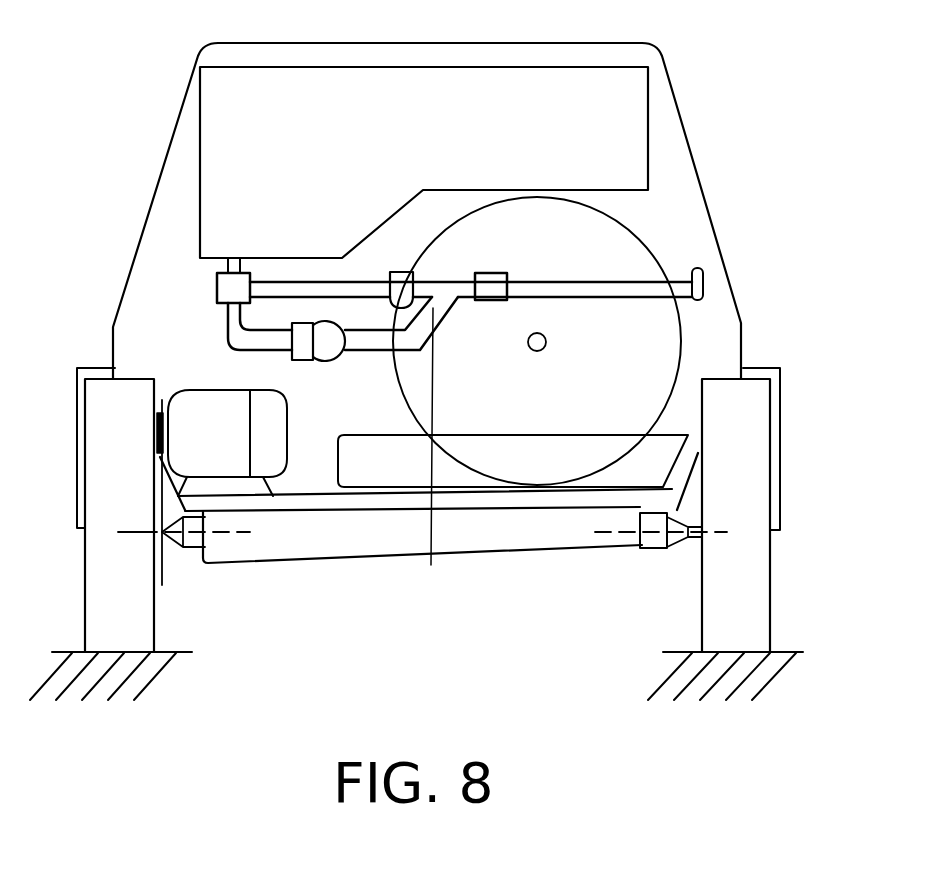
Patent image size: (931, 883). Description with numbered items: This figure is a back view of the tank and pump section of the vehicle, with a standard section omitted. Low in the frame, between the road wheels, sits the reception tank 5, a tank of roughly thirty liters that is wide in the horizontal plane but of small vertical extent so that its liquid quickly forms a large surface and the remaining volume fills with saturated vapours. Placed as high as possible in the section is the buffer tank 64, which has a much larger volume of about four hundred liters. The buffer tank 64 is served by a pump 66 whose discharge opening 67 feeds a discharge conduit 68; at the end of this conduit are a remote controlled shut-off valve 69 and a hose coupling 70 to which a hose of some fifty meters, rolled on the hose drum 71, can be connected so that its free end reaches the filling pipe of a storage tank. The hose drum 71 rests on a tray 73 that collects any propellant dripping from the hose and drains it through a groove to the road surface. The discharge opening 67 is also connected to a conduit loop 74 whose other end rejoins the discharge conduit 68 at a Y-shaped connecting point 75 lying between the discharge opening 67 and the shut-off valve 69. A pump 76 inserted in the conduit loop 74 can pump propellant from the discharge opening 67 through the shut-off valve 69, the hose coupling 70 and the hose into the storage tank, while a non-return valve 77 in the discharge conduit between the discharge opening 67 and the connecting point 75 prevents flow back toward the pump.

The reception tank 5 is at (392, 543).
The buffer tank 64 is at (428, 129).
The pump 66 is at (220, 230).
The discharge opening 67 is at (227, 265).
The discharge conduit 68 is at (620, 283).
The remote controlled shut-off valve 69 is at (490, 277).
The hose coupling 70 is at (697, 278).
The hose drum 71 is at (660, 350).
The tray 73 is at (637, 477).
The conduit loop 74 is at (232, 340).
The Y-shaped connecting point 75 is at (431, 565).
The pump 76 is at (328, 350).
The non-return valve 77 is at (397, 287).